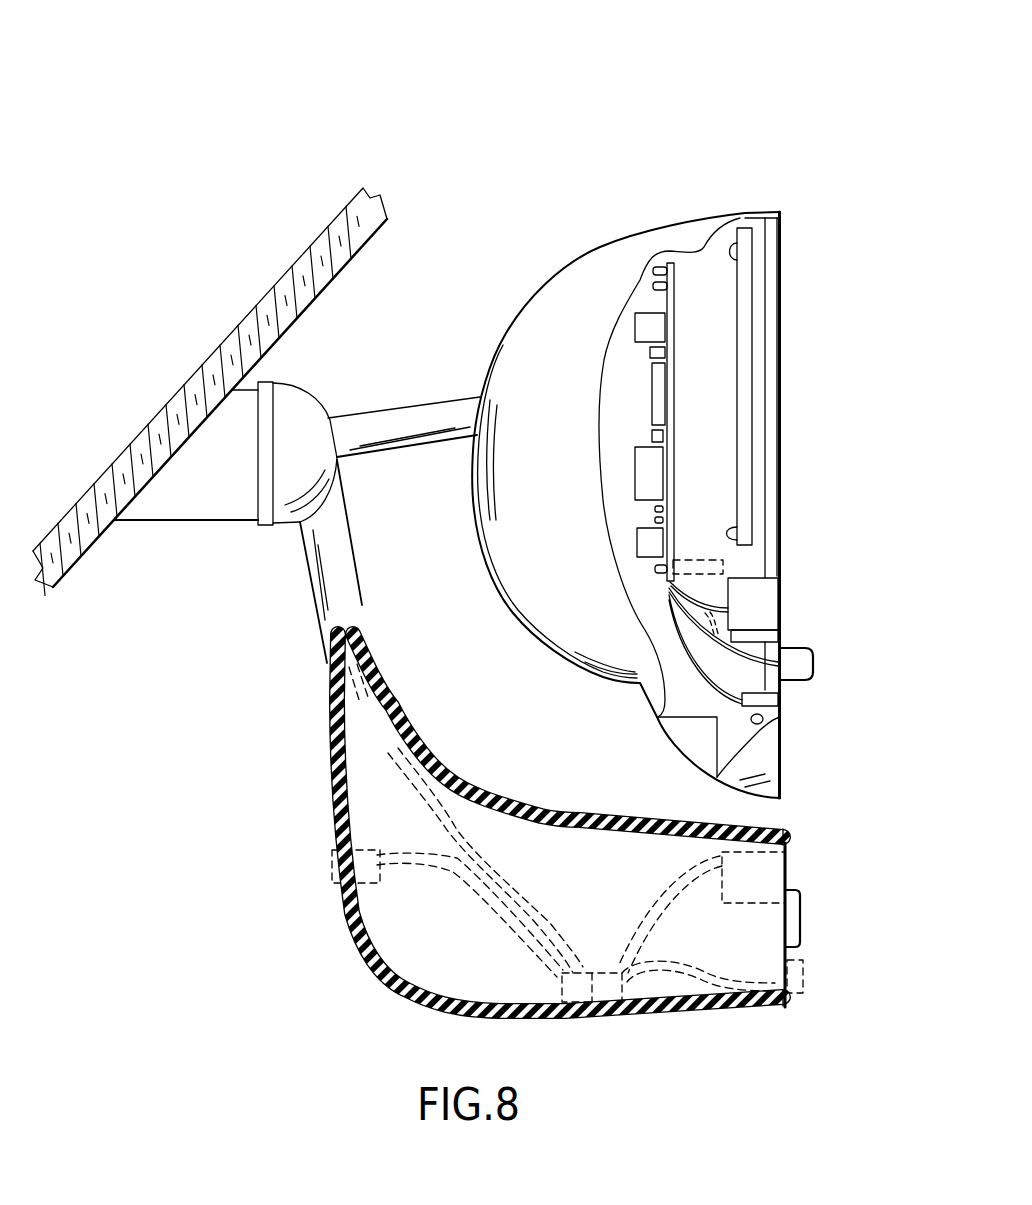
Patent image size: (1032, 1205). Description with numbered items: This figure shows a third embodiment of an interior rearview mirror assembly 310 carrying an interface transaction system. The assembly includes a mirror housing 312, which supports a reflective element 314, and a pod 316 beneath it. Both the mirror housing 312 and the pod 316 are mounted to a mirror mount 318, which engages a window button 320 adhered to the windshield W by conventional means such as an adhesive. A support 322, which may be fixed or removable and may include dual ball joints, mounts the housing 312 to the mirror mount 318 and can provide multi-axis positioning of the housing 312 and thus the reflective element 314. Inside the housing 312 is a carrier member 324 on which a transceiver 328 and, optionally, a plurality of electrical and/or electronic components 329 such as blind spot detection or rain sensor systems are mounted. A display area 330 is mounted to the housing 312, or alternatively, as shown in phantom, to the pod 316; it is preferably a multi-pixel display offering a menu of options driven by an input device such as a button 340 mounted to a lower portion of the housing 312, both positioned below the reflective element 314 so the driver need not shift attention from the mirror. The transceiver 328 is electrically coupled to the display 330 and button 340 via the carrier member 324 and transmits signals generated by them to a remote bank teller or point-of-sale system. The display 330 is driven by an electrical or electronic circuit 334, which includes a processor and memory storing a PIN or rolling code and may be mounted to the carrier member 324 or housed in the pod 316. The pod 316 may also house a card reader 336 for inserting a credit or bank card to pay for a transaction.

The windshield W is at (241, 333).
The interior rearview mirror assembly 310 is at (604, 213).
The mirror housing 312 is at (673, 232).
The reflective element 314 is at (745, 283).
The pod 316 is at (323, 703).
The mirror mount 318 is at (300, 406).
The window button 320 is at (237, 402).
The support 322 is at (427, 412).
The carrier member 324 is at (678, 305).
The transceiver 328 is at (653, 270).
The electrical and/or electronic components 329 is at (653, 285).
The display area 330 is at (765, 597).
The electrical or electronic circuit 334 is at (643, 330).
The card reader 336 is at (800, 913).
The button 340 is at (797, 677).